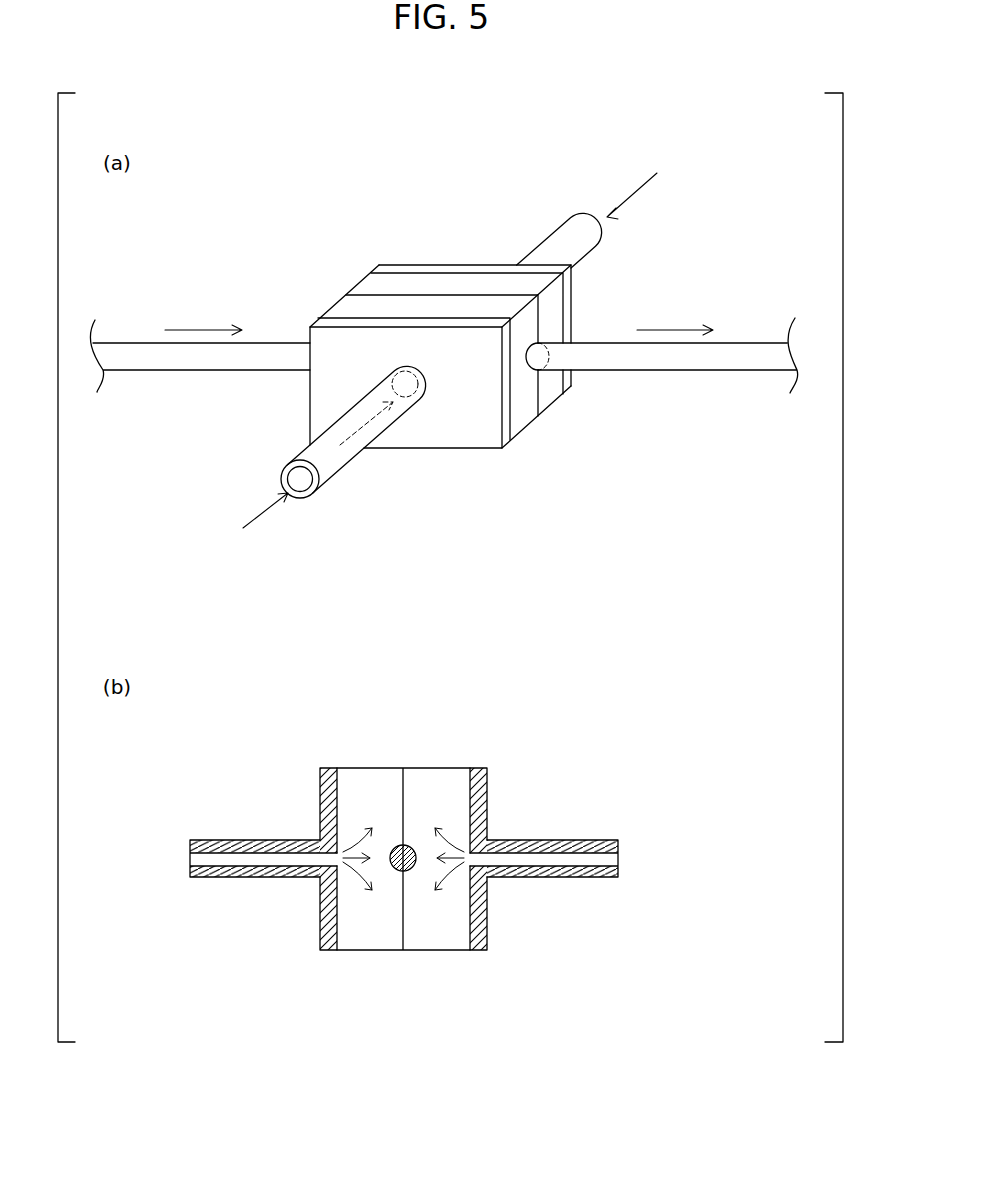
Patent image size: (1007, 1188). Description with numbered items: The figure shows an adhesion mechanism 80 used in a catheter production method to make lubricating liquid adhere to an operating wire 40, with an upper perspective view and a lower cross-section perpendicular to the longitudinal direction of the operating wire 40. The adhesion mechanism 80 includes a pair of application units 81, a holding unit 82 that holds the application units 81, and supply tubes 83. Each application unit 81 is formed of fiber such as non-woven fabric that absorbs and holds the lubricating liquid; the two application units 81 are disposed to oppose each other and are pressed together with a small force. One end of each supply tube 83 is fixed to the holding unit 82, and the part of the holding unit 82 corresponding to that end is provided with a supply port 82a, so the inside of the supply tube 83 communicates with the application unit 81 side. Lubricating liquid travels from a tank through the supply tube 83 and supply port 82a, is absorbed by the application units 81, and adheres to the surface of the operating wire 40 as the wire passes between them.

The operating wire 40 is at (702, 371).
The adhesion mechanism 80 is at (362, 216).
The application unit 81 is at (551, 410).
The holding unit 82 is at (574, 392).
The supply port 82a is at (418, 394).
The supply tube 83 is at (556, 236).